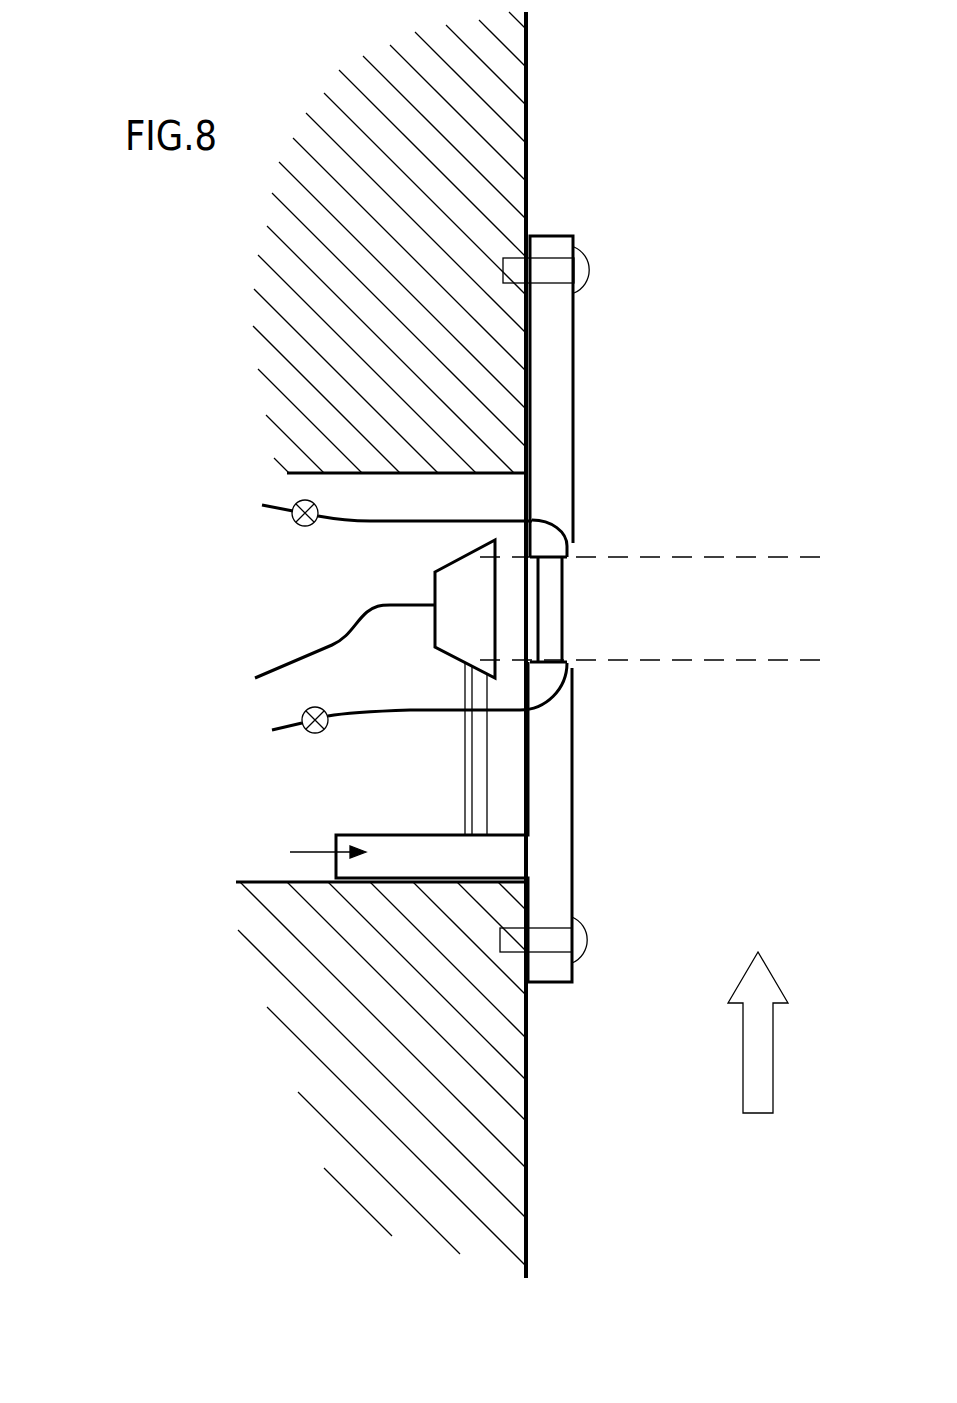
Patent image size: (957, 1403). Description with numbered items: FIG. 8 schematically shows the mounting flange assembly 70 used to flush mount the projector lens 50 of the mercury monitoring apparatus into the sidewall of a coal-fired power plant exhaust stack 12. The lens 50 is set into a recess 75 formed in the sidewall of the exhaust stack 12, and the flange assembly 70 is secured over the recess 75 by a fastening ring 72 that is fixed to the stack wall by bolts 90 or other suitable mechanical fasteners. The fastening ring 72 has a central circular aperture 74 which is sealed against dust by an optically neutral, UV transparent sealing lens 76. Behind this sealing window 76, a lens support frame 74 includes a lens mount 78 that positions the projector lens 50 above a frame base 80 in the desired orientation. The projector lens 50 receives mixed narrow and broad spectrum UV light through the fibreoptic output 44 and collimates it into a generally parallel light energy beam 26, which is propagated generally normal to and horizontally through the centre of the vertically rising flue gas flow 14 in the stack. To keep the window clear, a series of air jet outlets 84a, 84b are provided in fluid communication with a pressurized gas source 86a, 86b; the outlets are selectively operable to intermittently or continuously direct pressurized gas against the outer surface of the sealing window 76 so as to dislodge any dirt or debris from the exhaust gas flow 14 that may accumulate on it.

The exhaust stack 12 is at (497, 142).
The flue gas flow 14 is at (768, 1005).
The light energy beam 26 is at (767, 627).
The fibreoptic output 44 is at (332, 647).
The projector lens 50 is at (475, 572).
The mounting flange assembly 70 is at (562, 808).
The fastening ring 72 is at (558, 437).
The central circular aperture 74 is at (533, 558).
The recess 75 is at (418, 878).
The sealing lens 76 is at (555, 627).
The lens mount 78 is at (460, 743).
The frame base 80 is at (357, 835).
The air jet outlet 84a is at (568, 555).
The air jet outlet 84b is at (570, 663).
The pressurized gas source 86a is at (294, 521).
The pressurized gas source 86b is at (307, 733).
The bolts 90 is at (590, 272).